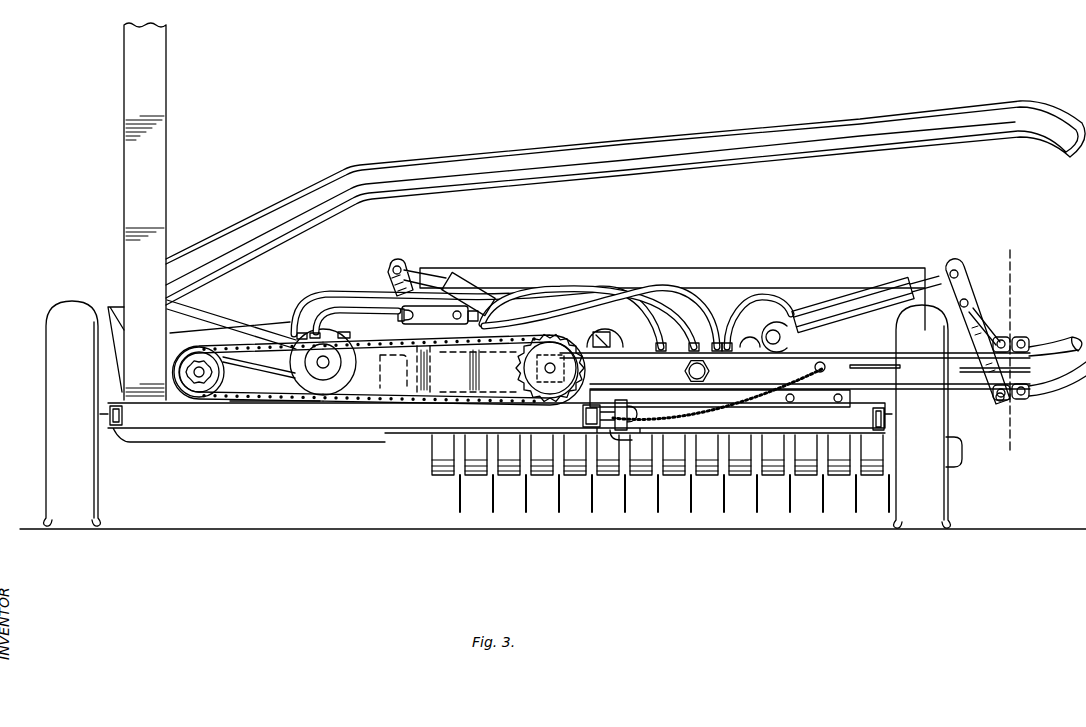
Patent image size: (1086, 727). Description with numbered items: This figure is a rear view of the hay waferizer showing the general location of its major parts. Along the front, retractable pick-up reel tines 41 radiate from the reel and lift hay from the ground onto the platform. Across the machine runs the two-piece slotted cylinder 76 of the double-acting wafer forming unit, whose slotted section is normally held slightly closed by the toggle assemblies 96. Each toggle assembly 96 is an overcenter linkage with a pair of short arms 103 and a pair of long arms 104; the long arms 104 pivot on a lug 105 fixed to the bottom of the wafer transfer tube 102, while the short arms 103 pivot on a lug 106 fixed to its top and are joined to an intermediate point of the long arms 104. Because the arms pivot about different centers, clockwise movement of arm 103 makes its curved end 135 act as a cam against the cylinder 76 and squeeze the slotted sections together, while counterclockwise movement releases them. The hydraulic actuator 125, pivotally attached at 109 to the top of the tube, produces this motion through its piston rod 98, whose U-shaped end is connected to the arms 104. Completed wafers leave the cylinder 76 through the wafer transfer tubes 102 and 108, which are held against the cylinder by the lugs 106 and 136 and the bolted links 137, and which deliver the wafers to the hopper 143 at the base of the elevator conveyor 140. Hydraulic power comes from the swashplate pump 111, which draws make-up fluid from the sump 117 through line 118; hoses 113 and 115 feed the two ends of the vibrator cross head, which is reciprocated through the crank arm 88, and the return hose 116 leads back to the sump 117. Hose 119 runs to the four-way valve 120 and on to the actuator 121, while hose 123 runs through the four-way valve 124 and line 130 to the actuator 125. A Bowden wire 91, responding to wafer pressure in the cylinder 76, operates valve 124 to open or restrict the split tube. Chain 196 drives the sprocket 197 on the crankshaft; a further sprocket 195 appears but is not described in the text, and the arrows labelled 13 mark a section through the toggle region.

The elevator conveyor 140 is at (174, 121).
The hopper 143 is at (112, 306).
The wafer transfer tube 108 is at (214, 315).
The wafer transfer tube 102 is at (614, 150).
The hose 119 is at (362, 306).
The hydraulic actuator 121 is at (462, 284).
The four-way valve 120 is at (438, 315).
The vibrator return hose 116 is at (590, 294).
The hose 113 is at (618, 296).
The hose 115 is at (683, 300).
The hydraulic actuator 125 is at (848, 302).
The toggle assembly 96 is at (922, 262).
The piston rod 98 is at (957, 262).
The section line 13 is at (1010, 251).
The short arms 103 is at (986, 325).
The lug 106 is at (1018, 324).
The curved end 135 is at (1012, 340).
The lug 136 is at (1030, 343).
The link 137 is at (1028, 360).
The lug 105 is at (1012, 401).
The long arms 104 is at (1005, 405).
The pivotal attachment 109 is at (790, 344).
The crank arm 88 is at (616, 338).
The hose connection 130 is at (712, 375).
The Bowden wire 91 is at (770, 400).
The cylinder 76 is at (832, 389).
The four-way valve 124 is at (632, 412).
The sprocket 197 is at (544, 392).
The hose 123 is at (412, 437).
The fluid sump 117 is at (454, 370).
The line 118 is at (345, 368).
The swashplate type pump 111 is at (336, 401).
The sprocket 195 is at (205, 400).
The chain 196 is at (262, 400).
The pick-up reel tines 41 is at (458, 497).